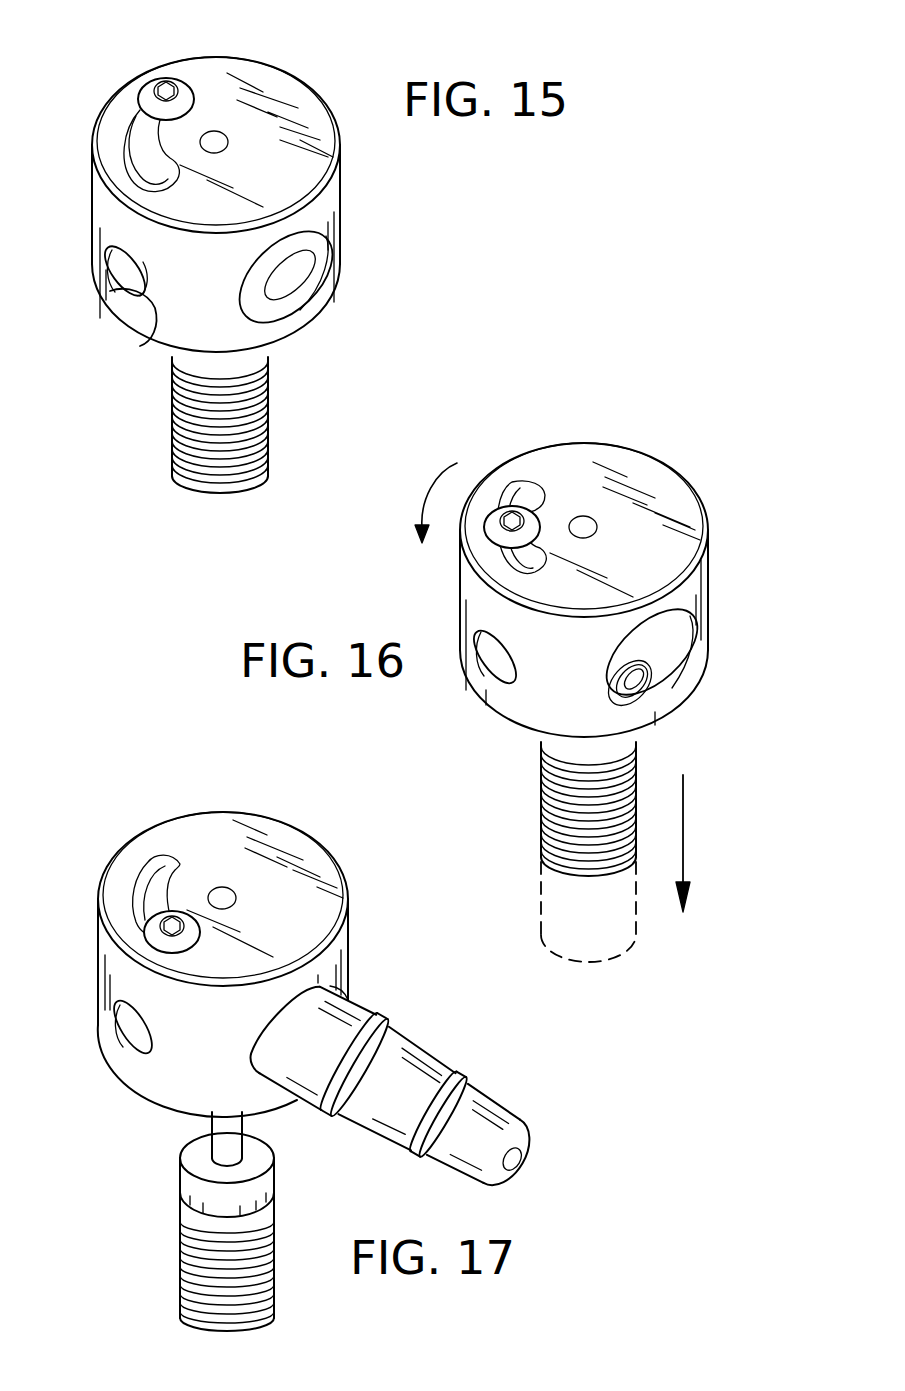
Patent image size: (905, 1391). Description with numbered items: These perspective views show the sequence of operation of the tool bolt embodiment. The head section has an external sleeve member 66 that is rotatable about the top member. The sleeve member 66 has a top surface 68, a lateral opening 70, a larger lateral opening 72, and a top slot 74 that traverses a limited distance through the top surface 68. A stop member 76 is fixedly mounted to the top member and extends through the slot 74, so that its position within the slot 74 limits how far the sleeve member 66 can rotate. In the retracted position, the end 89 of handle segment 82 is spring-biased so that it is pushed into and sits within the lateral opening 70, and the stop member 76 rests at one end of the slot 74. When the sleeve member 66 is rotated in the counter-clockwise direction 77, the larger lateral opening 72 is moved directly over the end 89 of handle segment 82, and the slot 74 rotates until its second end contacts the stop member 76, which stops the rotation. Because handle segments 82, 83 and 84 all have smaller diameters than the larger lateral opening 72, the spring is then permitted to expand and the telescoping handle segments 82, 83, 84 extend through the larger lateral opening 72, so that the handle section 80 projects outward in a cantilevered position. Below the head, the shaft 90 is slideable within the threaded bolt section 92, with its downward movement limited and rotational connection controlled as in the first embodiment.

In FIG. 15, the sleeve member 66 is at (328, 193).
In FIG. 16, the sleeve member 66 is at (692, 588).
In FIG. 17, the sleeve member 66 is at (133, 980).
In FIG. 15, the top surface 68 is at (206, 78).
In FIG. 16, the top surface 68 is at (570, 467).
In FIG. 17, the top surface 68 is at (210, 837).
In FIG. 15, the lateral opening 70 is at (143, 343).
In FIG. 16, the lateral opening 70 is at (498, 658).
In FIG. 17, the lateral opening 70 is at (133, 1027).
In FIG. 15, the larger lateral opening 72 is at (322, 253).
In FIG. 16, the larger lateral opening 72 is at (680, 640).
In FIG. 17, the larger lateral opening 72 is at (340, 993).
In FIG. 15, the top slot 74 is at (140, 148).
In FIG. 16, the top slot 74 is at (522, 494).
In FIG. 17, the top slot 74 is at (157, 867).
In FIG. 15, the stop member 76 is at (152, 88).
In FIG. 16, the stop member 76 is at (512, 527).
In FIG. 17, the stop member 76 is at (152, 933).
In FIG. 16, the counter-clockwise direction 77 is at (423, 503).
In FIG. 17, the handle section 80 is at (412, 1153).
In FIG. 17, the handle segment 82 is at (463, 1110).
In FIG. 17, the handle segment 83 is at (400, 1057).
In FIG. 17, the handle segment 84 is at (340, 1012).
In FIG. 15, the end of handle segment 89 is at (123, 268).
In FIG. 16, the end of handle segment 89 is at (620, 680).
In FIG. 17, the shaft 90 is at (223, 1125).
In FIG. 15, the bolt section 92 is at (172, 437).
In FIG. 16, the bolt section 92 is at (637, 770).
In FIG. 17, the bolt section 92 is at (178, 1260).